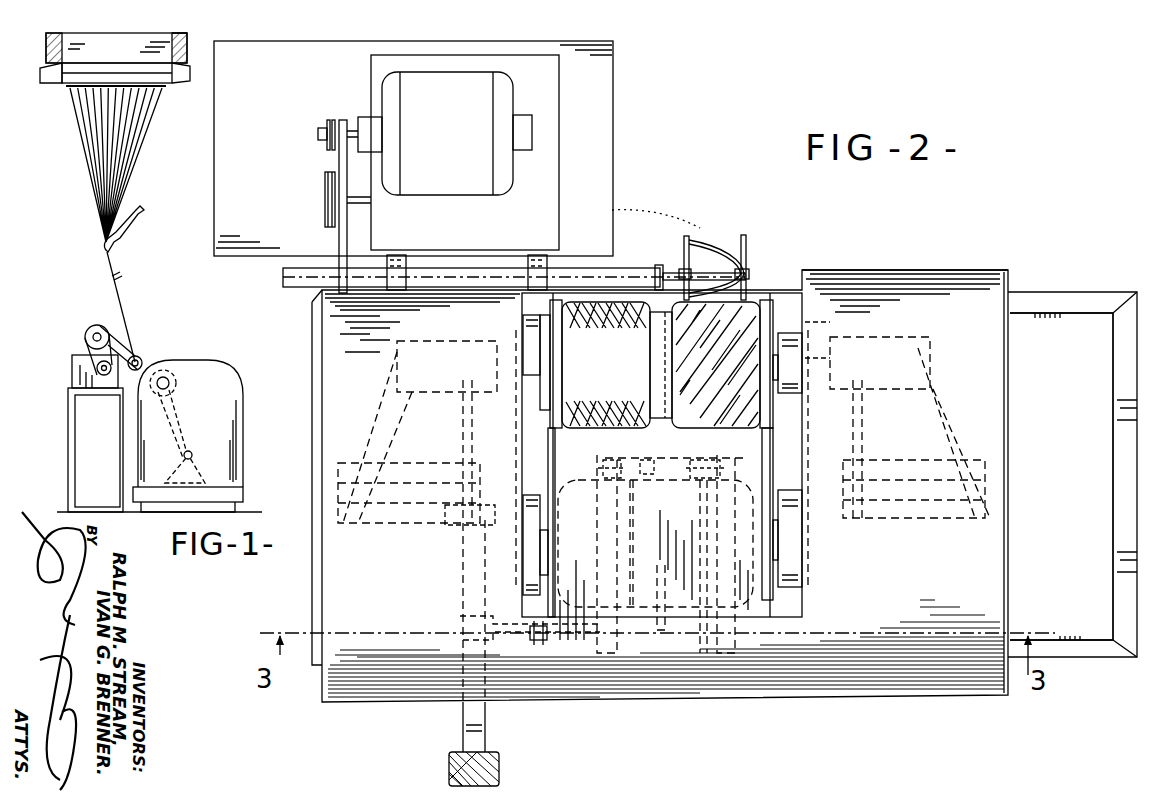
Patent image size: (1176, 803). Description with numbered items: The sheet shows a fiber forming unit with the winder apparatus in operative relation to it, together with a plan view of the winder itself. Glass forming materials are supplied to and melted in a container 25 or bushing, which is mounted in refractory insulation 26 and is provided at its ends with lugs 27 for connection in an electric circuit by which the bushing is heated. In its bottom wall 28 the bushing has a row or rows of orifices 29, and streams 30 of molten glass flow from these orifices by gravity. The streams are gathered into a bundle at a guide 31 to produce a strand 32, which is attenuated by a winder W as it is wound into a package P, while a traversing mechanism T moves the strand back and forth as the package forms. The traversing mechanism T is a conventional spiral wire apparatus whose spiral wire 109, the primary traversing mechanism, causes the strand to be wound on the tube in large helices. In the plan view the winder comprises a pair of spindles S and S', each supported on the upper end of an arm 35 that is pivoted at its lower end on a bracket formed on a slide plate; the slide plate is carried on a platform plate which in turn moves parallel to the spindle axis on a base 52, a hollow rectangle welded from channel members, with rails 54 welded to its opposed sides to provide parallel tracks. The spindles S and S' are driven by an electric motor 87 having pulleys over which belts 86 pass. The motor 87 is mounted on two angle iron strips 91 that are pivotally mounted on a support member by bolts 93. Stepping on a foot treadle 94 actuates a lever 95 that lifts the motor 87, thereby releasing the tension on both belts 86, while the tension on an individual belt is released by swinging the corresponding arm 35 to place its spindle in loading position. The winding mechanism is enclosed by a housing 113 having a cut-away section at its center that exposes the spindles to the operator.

In FIG. 1, the container 25 is at (101, 36).
In FIG. 1, the refractory insulation 26 is at (184, 36).
In FIG. 1, the die block lips 27 is at (40, 100).
In FIG. 1, the bottom wall 28 is at (79, 89).
In FIG. 1, the orifices 29 is at (118, 89).
In FIG. 1, the streams 30 is at (90, 162).
In FIG. 1, the guide 31 is at (132, 230).
In FIG. 1, the strand 32 is at (133, 304).
In FIG. 1, the traversing mechanism T is at (76, 350).
In FIG. 2, the traversing mechanism T is at (615, 80).
In FIG. 1, the winder W is at (222, 364).
In FIG. 2, the winder W is at (964, 268).
In FIG. 1, the package P is at (176, 384).
In FIG. 2, the spiral wire 109 is at (730, 240).
In FIG. 2, the spindle S is at (629, 364).
In FIG. 2, the spindle S' is at (796, 426).
In FIG. 2, the belts 86 is at (528, 420).
In FIG. 2, the arm 35 is at (380, 412).
In FIG. 2, the electric motor 87 is at (592, 488).
In FIG. 2, the angle iron strips 91 is at (598, 462).
In FIG. 2, the bolts 93 is at (672, 456).
In FIG. 2, the lever 95 is at (454, 614).
In FIG. 2, the foot treadle 94 is at (480, 746).
In FIG. 2, the housing 113 is at (1010, 296).
In FIG. 2, the rails 54 is at (1078, 316).
In FIG. 2, the base 52 is at (1114, 488).